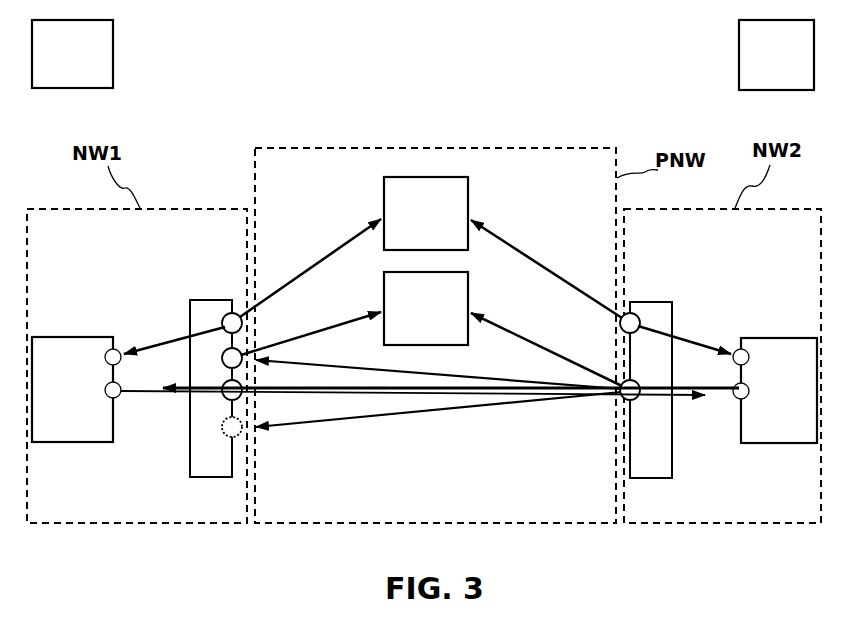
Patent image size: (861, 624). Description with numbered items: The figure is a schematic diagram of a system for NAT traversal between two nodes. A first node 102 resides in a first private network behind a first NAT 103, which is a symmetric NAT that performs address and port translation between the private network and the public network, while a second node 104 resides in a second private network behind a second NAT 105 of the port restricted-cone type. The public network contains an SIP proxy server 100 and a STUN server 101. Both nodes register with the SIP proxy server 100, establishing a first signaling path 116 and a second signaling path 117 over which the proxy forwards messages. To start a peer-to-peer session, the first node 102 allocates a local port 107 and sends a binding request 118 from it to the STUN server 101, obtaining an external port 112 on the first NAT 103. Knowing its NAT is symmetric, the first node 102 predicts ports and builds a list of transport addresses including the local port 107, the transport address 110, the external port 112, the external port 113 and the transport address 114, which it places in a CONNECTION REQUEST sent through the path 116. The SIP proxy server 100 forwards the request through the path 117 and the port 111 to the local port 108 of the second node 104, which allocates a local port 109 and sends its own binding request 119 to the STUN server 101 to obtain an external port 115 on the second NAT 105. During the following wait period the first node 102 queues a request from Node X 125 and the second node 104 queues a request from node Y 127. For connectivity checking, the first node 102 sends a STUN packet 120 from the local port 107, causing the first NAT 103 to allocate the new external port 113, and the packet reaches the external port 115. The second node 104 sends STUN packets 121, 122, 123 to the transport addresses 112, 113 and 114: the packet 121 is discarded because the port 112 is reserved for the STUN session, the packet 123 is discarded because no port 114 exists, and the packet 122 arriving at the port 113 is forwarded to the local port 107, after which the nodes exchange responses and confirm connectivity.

The SIP proxy server 100 is at (468, 190).
The STUN server 101 is at (470, 287).
The first node 102 is at (68, 337).
The first NAT 103 is at (220, 300).
The second node 104 is at (757, 337).
The second NAT 105 is at (652, 302).
The local port 107 is at (117, 400).
The local port 108 is at (738, 350).
The local port 109 is at (736, 399).
The transport address 110 is at (242, 314).
The port 111 is at (643, 319).
The external port 112 is at (246, 349).
The external port 113 is at (223, 399).
The transport address 114 is at (240, 438).
The external port 115 is at (623, 402).
The first signaling path 116 is at (337, 248).
The second signaling path 117 is at (527, 251).
The binding request 118 is at (352, 312).
The binding request 119 is at (520, 330).
The STUN packet 120 is at (370, 397).
The STUN packet 121 is at (308, 362).
The STUN packet 122 is at (350, 385).
The STUN packet 123 is at (305, 427).
The Node X 125 is at (113, 62).
The node Y 127 is at (739, 52).